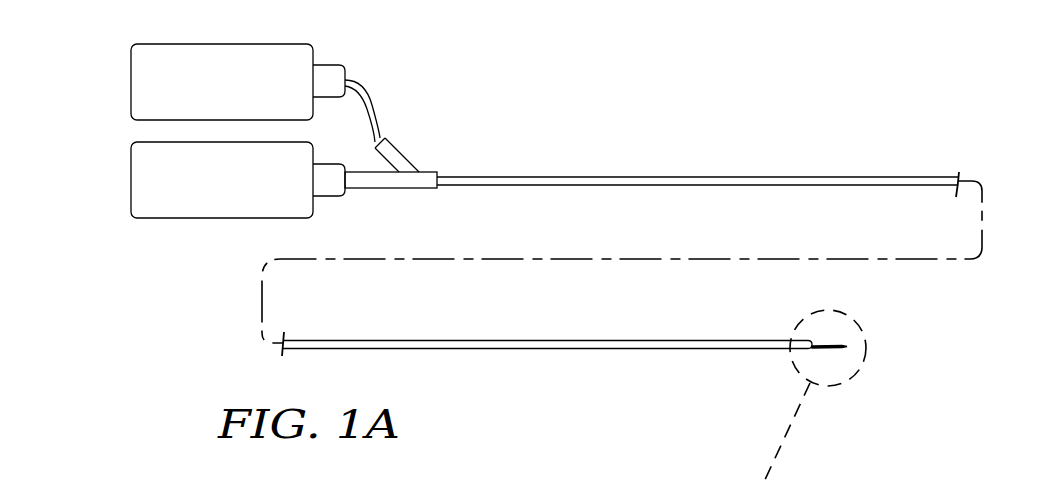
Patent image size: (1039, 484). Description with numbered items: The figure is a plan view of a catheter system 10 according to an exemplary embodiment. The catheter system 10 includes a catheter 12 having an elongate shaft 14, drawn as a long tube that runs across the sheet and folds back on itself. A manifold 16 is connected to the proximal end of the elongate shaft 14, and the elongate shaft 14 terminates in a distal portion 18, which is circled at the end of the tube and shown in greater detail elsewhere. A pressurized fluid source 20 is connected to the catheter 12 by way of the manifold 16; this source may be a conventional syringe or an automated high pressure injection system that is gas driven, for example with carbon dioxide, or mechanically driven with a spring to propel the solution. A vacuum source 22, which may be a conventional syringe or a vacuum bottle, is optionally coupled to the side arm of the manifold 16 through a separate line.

The catheter system 10 is at (731, 70).
The catheter 12 is at (622, 282).
The elongate shaft 14 is at (743, 176).
The manifold 16 is at (421, 161).
The distal portion 18 is at (834, 327).
The pressurized fluid source 20 is at (126, 181).
The vacuum source 22 is at (126, 76).